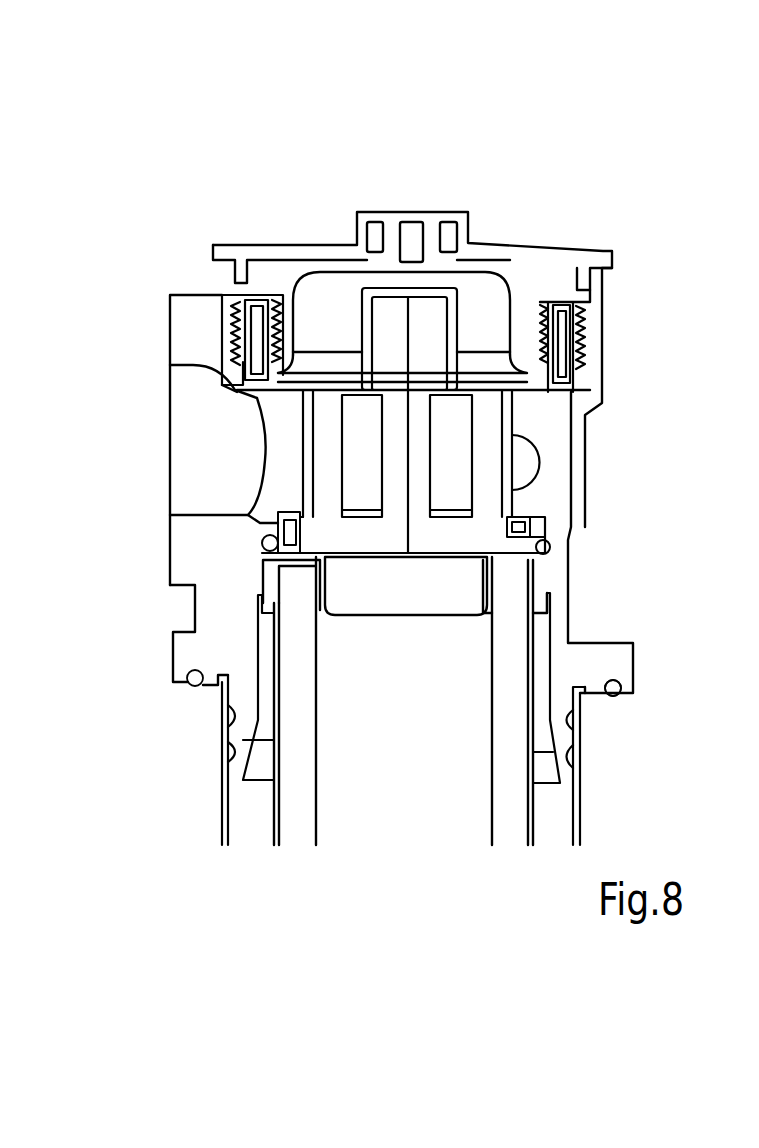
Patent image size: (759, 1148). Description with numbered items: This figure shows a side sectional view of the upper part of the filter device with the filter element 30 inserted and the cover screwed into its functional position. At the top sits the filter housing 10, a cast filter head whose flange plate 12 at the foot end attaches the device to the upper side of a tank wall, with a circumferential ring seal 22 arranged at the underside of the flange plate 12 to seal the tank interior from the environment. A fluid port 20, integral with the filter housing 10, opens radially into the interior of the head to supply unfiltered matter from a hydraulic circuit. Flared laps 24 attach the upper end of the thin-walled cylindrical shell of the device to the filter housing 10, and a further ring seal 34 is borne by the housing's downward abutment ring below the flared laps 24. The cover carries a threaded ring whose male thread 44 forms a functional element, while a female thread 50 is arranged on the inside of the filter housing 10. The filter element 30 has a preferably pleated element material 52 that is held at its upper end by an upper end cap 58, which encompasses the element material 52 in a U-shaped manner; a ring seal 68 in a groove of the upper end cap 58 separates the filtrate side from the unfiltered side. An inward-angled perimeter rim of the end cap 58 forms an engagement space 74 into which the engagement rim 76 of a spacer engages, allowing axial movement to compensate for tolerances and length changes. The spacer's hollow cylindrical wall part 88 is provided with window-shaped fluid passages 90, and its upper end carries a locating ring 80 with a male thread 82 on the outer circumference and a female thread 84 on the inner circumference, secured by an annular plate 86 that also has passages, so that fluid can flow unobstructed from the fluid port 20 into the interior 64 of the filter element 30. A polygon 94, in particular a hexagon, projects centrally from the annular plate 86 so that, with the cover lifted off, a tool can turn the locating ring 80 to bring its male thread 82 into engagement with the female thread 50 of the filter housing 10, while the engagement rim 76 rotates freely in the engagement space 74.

The filter housing 10 is at (290, 262).
The flange plate 12 is at (185, 650).
The fluid port 20 is at (215, 445).
The ring seal 22 is at (616, 697).
The flared laps 24 is at (227, 710).
The filter element 30 is at (535, 820).
The element material 52 is at (406, 702).
The ring seal 34 is at (228, 747).
The male thread 44 is at (270, 333).
The female thread 50 is at (587, 337).
The upper end cap 58 is at (325, 580).
The interior 64 is at (418, 678).
The ring seal 68 is at (262, 543).
The engagement space 74 is at (580, 535).
The engagement rim 76 is at (541, 557).
The locating ring 80 is at (562, 350).
The male thread 82 is at (587, 320).
The female thread 84 is at (312, 247).
The annular plate 86 is at (538, 398).
The wall part 88 is at (467, 532).
The fluid passages 90 is at (378, 455).
The polygon 94 is at (427, 325).